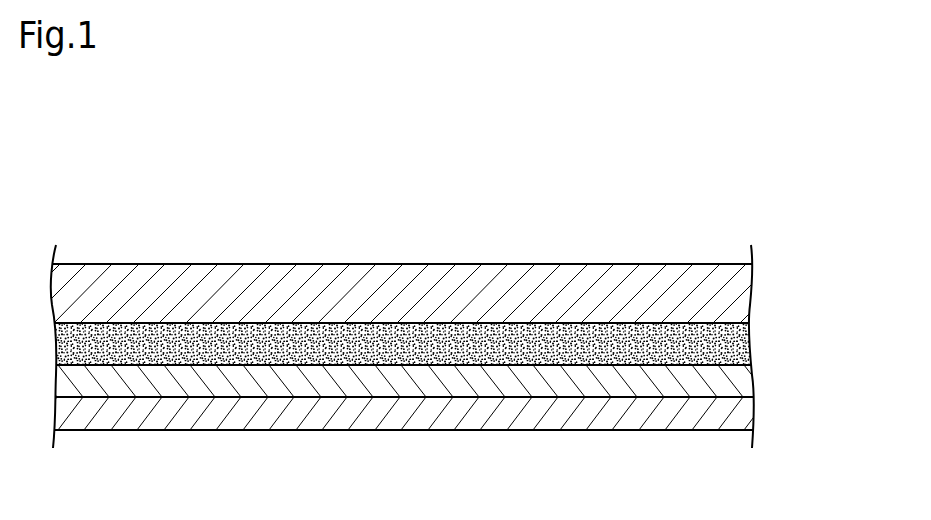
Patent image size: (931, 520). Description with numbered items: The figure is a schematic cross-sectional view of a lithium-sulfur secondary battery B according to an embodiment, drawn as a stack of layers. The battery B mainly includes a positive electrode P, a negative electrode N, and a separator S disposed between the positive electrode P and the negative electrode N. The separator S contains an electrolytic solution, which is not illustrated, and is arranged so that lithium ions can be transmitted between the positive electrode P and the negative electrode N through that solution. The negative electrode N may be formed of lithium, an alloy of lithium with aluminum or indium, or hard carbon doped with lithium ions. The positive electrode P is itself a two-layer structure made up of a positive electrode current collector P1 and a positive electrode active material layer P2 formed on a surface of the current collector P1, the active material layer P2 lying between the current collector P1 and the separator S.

The lithium-sulfur secondary battery B is at (616, 259).
The negative electrode N is at (742, 288).
The separator S is at (750, 343).
The positive electrode P is at (440, 398).
The positive electrode active material layer P2 is at (748, 373).
The positive electrode current collector P1 is at (748, 412).